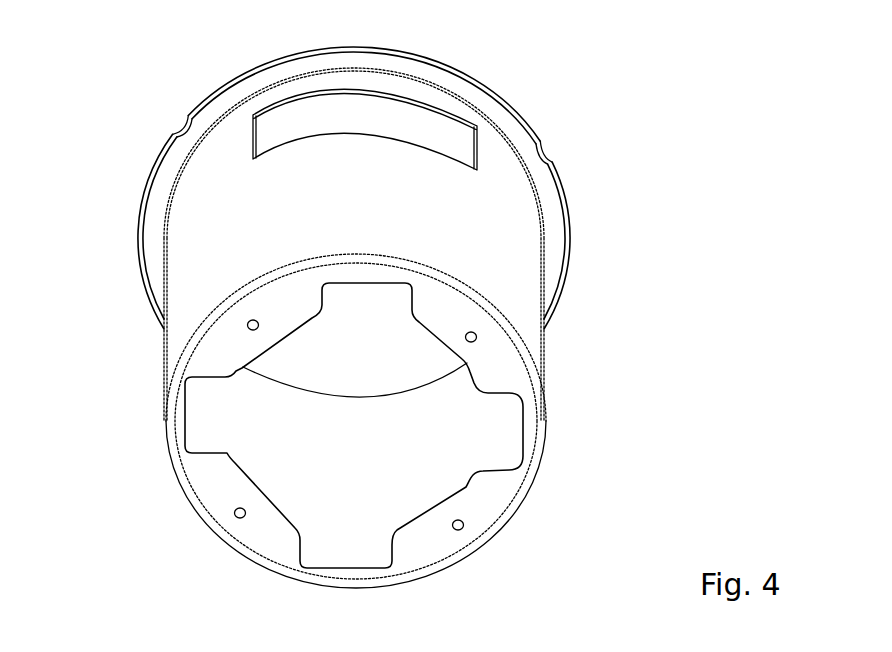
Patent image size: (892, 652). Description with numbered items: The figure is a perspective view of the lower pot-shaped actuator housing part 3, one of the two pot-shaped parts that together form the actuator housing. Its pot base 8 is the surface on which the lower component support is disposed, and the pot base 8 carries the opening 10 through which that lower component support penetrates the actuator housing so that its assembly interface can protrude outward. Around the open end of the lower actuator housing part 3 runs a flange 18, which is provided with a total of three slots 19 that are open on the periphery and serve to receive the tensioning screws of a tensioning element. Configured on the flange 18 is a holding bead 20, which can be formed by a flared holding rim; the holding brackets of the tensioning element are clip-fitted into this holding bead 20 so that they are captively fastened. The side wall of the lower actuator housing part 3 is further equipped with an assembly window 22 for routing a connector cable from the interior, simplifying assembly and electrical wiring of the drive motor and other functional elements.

The lower pot-shaped actuator housing part 3 is at (522, 308).
The pot base 8 is at (500, 373).
The opening 10 is at (216, 405).
The flange 18 is at (557, 211).
The slots 19 is at (187, 132).
The holding bead 20 is at (147, 188).
The assembly window 22 is at (352, 105).